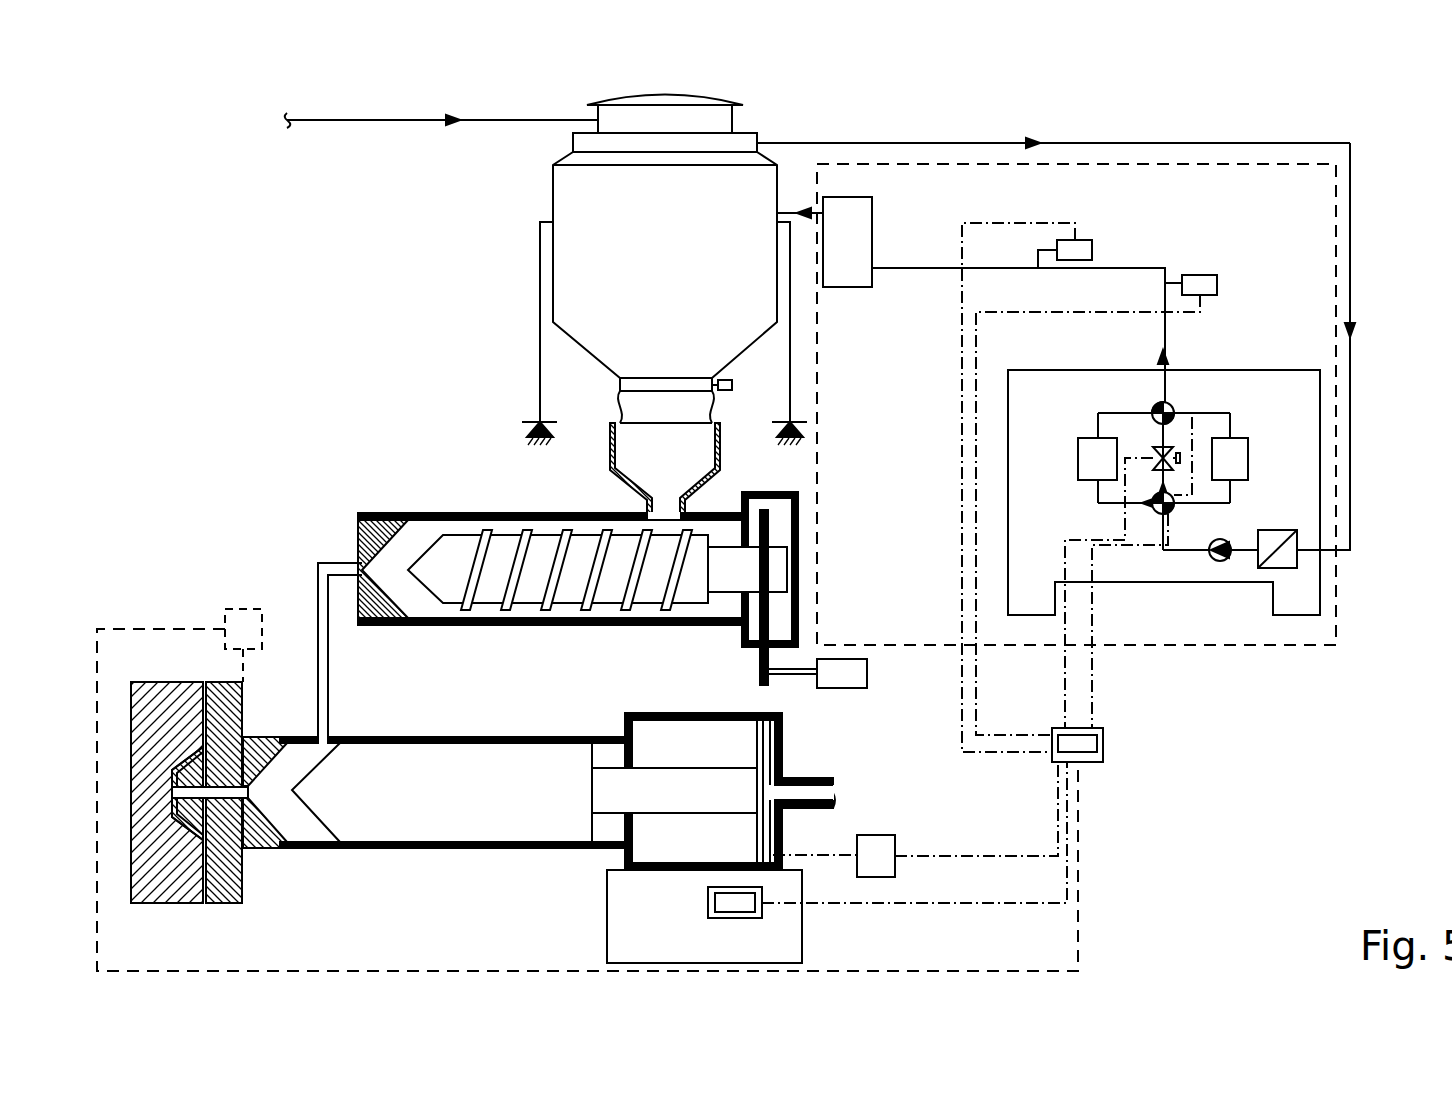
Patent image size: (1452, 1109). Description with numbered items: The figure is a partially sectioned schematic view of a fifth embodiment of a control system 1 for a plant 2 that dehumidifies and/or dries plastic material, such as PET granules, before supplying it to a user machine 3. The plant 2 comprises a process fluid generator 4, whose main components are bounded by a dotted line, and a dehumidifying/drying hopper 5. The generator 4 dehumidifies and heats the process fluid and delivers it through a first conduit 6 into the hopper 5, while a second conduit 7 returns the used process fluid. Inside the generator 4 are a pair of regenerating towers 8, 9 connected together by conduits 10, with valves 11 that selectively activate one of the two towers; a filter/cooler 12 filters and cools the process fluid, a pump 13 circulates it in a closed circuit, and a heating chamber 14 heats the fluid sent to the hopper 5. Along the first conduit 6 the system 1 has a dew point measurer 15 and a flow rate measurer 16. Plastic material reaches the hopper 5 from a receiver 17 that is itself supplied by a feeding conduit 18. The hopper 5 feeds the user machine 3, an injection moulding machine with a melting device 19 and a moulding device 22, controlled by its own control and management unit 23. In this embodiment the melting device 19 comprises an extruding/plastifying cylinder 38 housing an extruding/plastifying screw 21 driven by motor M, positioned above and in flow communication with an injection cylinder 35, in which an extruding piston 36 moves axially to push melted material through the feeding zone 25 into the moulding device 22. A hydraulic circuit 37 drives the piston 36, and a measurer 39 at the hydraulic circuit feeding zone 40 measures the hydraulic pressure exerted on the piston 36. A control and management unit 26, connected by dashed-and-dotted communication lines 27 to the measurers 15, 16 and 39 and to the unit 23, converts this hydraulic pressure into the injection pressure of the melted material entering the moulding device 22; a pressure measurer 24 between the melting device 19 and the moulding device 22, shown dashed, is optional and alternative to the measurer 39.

The control system 1 is at (205, 143).
The dehumidifying and/or drying plant 2 is at (1358, 137).
The user machine 3 is at (390, 478).
The process fluid generator 4 is at (1235, 653).
The dehumidifying/drying hopper 5 is at (678, 267).
The first conduit 6 is at (802, 213).
The second conduit 7 is at (1105, 140).
The regenerating tower 8 is at (1106, 473).
The regenerating tower 9 is at (1238, 473).
The conduits 10 is at (1120, 413).
The valves 11 is at (1170, 404).
The filter/cooler 12 is at (1297, 562).
The pump 13 is at (1212, 556).
The heating chamber 14 is at (865, 255).
The dew point measurer 15 is at (1205, 275).
The flow rate measurer 16 is at (1085, 240).
The receiver 17 is at (733, 120).
The feeding conduit 18 is at (382, 118).
The melting device 19 is at (486, 866).
The extruding/plastifying screw 21 is at (568, 604).
The moulding device 22 is at (189, 909).
The control and management unit 23 is at (738, 918).
The pressure measurer 24 is at (255, 607).
The feeding zone 25 is at (252, 792).
The control and management unit 26 is at (1104, 732).
The communication lines 27 is at (960, 450).
The injection cylinder 35 is at (440, 737).
The extruding piston 36 is at (412, 832).
The hydraulic circuit 37 is at (792, 778).
The extruding/plastifying cylinder 38 is at (502, 513).
The measurer 39 is at (880, 877).
The hydraulic circuit feeding zone 40 is at (790, 798).